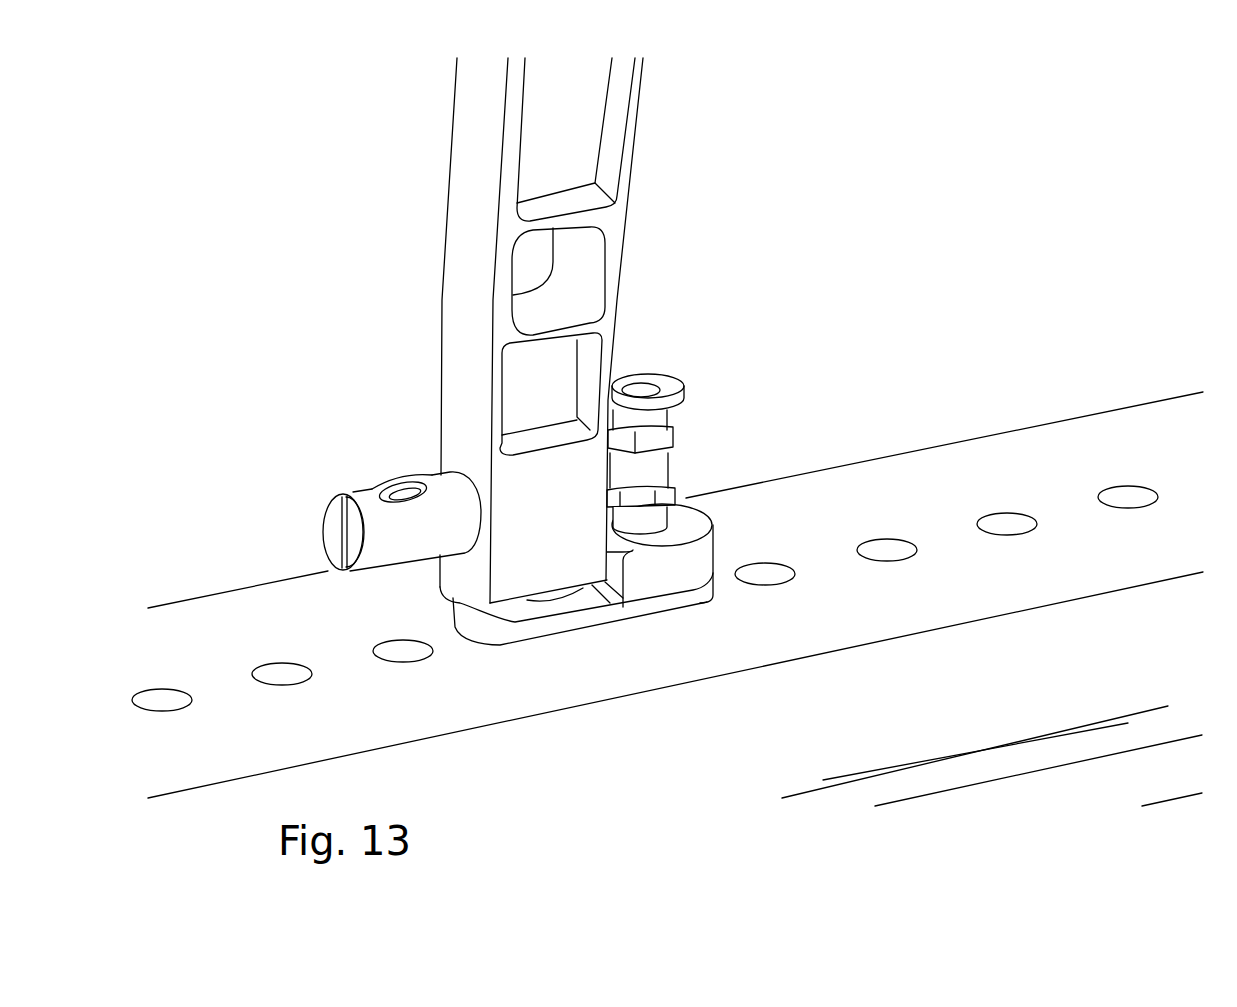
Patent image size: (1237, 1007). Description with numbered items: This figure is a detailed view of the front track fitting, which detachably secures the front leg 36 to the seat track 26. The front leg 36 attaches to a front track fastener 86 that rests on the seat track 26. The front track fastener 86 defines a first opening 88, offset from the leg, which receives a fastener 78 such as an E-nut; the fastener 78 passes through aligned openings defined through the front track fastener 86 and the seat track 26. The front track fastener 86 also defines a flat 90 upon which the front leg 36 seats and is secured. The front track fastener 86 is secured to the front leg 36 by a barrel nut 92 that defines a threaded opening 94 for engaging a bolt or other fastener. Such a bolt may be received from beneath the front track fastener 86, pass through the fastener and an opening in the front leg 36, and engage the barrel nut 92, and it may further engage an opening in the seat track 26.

The seat track 26 is at (1038, 448).
The front leg 36 is at (608, 220).
The fastener 78 is at (670, 390).
The front track fastener 86 is at (717, 567).
The first opening 88 is at (677, 510).
The flat 90 is at (570, 605).
The barrel nut 92 is at (345, 490).
The threaded opening 94 is at (410, 492).